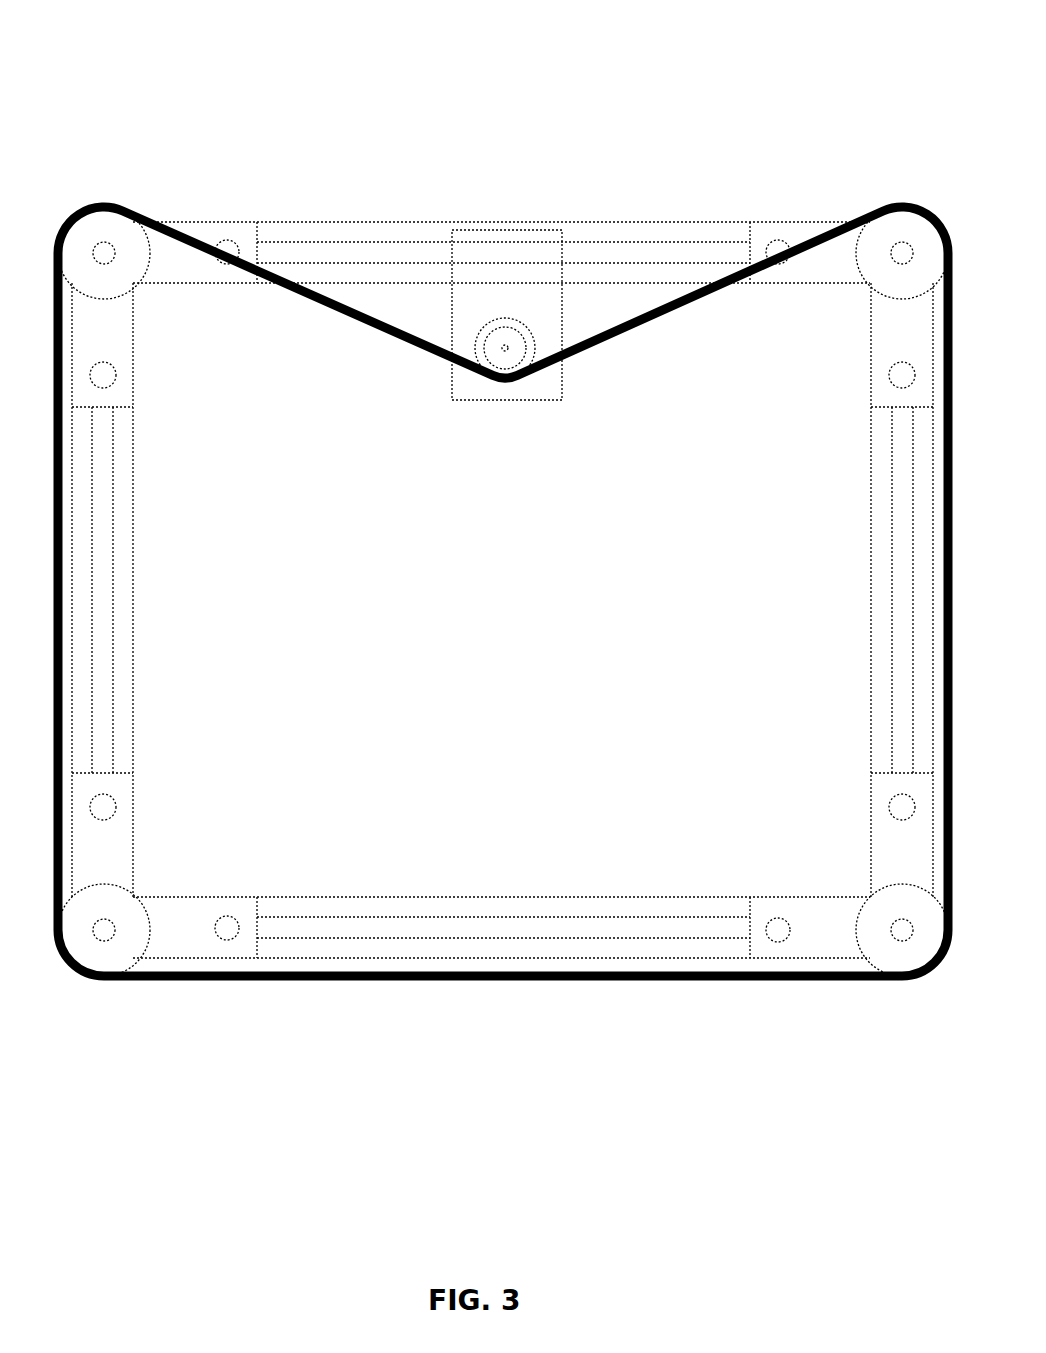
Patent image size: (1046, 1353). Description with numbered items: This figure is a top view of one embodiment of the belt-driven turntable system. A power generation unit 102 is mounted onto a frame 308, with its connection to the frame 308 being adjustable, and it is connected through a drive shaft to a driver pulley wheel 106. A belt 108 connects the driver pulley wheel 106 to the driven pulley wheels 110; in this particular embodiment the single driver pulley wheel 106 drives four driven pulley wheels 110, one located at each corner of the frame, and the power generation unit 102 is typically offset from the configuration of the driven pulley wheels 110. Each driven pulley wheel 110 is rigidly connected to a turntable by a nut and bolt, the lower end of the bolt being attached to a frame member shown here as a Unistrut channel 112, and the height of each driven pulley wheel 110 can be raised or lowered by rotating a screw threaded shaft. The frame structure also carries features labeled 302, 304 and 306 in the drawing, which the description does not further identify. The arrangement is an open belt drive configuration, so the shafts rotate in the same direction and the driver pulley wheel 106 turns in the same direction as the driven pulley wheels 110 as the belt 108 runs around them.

The power generation unit 102 is at (520, 255).
The driver pulley wheel 106 is at (500, 363).
The belt 108 is at (372, 318).
The driven pulley wheel 110 is at (112, 230).
The Unistrut channel 112 is at (875, 587).
The frame 302 is at (272, 880).
The mounting hole 304 is at (902, 833).
The hole 306 is at (780, 915).
The frame 308 is at (322, 57).